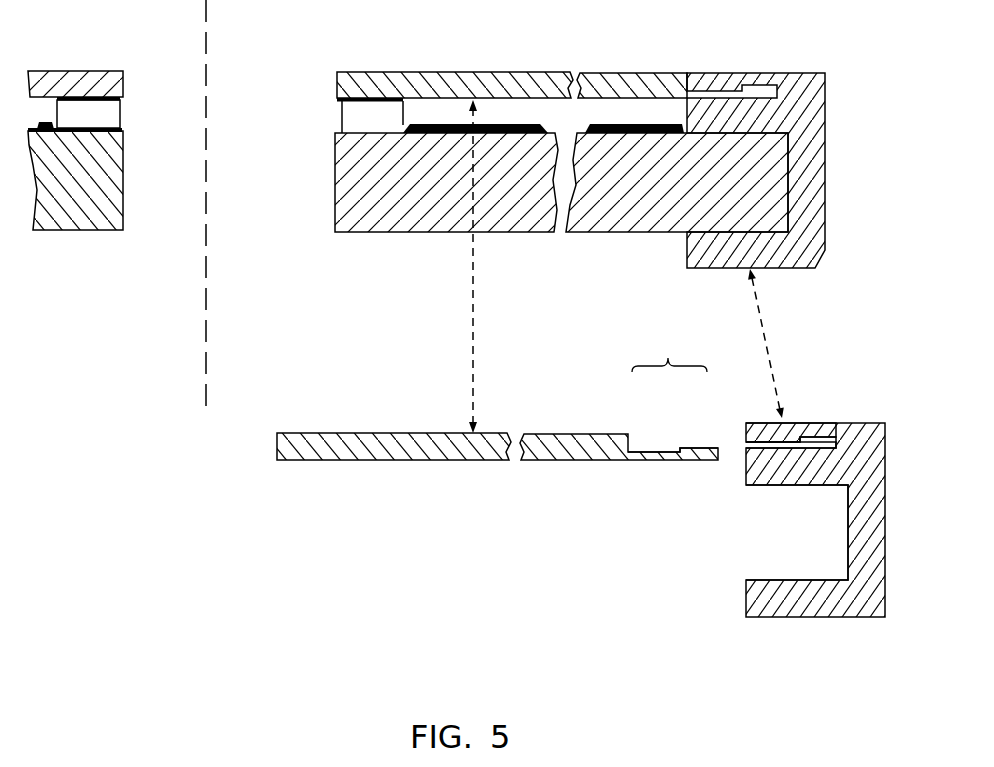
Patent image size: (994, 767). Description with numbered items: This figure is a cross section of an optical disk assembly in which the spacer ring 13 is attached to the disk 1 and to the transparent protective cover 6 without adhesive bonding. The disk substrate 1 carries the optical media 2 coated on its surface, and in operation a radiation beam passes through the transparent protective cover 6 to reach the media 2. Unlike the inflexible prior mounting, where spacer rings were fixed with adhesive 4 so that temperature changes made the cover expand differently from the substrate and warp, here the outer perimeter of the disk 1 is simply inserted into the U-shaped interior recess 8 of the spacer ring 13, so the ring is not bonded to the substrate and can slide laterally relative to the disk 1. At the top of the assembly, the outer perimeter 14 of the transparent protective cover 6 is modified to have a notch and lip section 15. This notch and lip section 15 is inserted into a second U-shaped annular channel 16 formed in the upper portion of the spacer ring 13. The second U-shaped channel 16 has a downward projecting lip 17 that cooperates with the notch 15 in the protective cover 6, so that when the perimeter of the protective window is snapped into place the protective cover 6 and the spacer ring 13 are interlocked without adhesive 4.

The disk substrate 1 is at (382, 215).
The optical media 2 is at (447, 123).
The adhesive 4 is at (363, 128).
The transparent protective cover 6 is at (523, 86).
The U-shaped interior recess 8 is at (823, 538).
The spacer ring 13 is at (805, 155).
The outer perimeter 14 is at (667, 350).
The notch and lip section 15 is at (678, 446).
The second U-shaped annular channel 16 is at (810, 446).
The downward projecting lip 17 is at (747, 427).